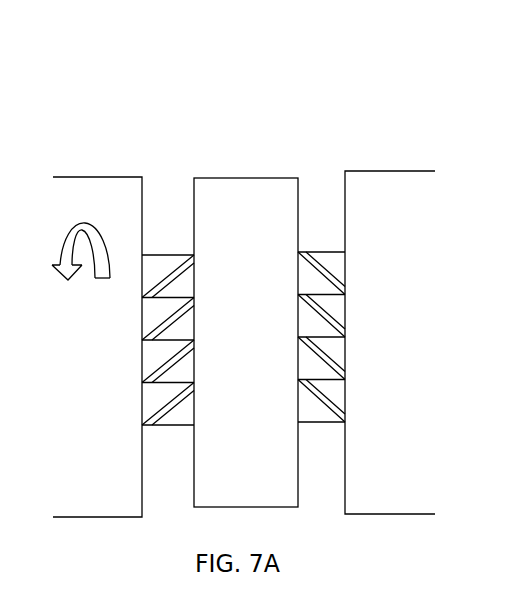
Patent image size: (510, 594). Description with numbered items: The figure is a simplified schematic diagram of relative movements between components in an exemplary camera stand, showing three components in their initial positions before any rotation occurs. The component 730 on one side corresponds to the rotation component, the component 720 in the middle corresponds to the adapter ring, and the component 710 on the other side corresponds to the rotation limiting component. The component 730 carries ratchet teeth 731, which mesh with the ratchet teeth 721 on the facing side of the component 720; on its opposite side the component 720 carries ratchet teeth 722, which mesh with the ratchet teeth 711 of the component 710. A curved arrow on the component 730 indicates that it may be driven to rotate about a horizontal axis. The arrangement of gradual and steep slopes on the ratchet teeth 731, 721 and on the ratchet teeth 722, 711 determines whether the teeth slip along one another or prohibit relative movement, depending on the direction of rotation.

The component 710 is at (399, 171).
The ratchet teeth 711 is at (336, 306).
The component 720 is at (260, 178).
The ratchet teeth 721 is at (188, 316).
The ratchet teeth 722 is at (305, 264).
The component 730 is at (99, 177).
The ratchet teeth 731 is at (153, 313).